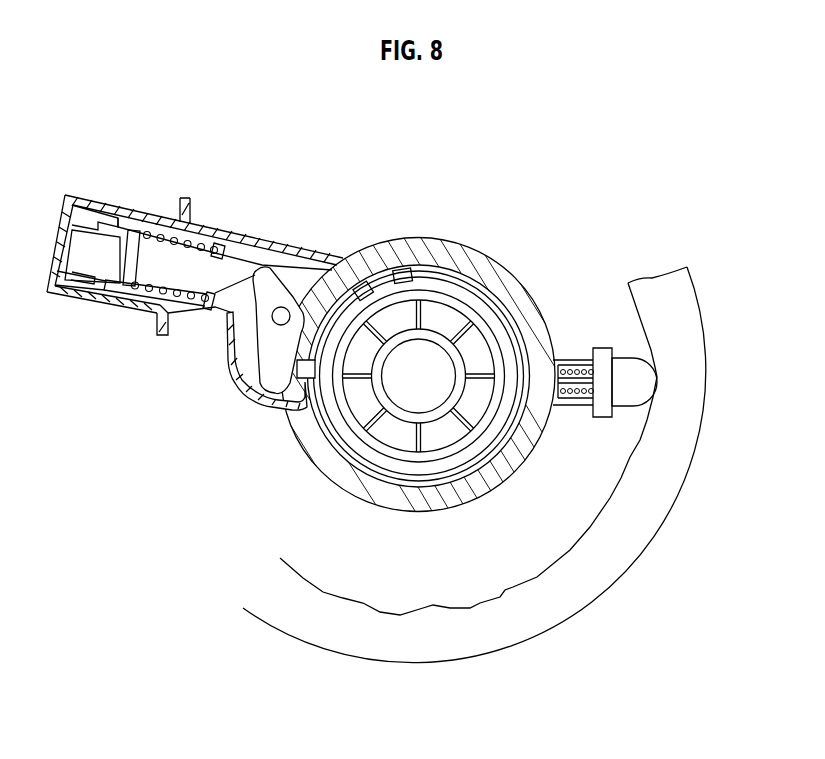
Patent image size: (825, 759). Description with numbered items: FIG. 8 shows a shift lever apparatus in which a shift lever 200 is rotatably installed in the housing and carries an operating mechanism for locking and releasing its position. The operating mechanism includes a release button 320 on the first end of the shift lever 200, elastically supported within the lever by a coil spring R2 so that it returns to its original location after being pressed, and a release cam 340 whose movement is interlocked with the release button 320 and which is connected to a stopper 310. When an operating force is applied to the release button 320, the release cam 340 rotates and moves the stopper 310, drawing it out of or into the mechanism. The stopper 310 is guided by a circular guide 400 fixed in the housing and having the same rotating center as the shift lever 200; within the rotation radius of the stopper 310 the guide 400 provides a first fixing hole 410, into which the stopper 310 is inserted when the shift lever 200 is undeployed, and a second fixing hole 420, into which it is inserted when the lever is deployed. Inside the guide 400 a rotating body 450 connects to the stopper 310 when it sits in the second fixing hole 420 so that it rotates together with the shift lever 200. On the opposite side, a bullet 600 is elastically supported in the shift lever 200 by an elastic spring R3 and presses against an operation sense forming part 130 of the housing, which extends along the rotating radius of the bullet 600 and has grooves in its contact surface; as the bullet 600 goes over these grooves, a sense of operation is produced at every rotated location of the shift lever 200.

The operation sense forming part 130 is at (555, 607).
The shift lever 200 is at (264, 228).
The stopper 310 is at (300, 378).
The release button 320 is at (107, 257).
The release cam 340 is at (270, 362).
The guide 400 is at (484, 290).
The first fixing hole 410 is at (348, 410).
The second fixing hole 420 is at (394, 256).
The rotating body 450 is at (437, 297).
The bullet 600 is at (640, 377).
The coil spring R2 is at (190, 203).
The elastic spring R3 is at (580, 372).